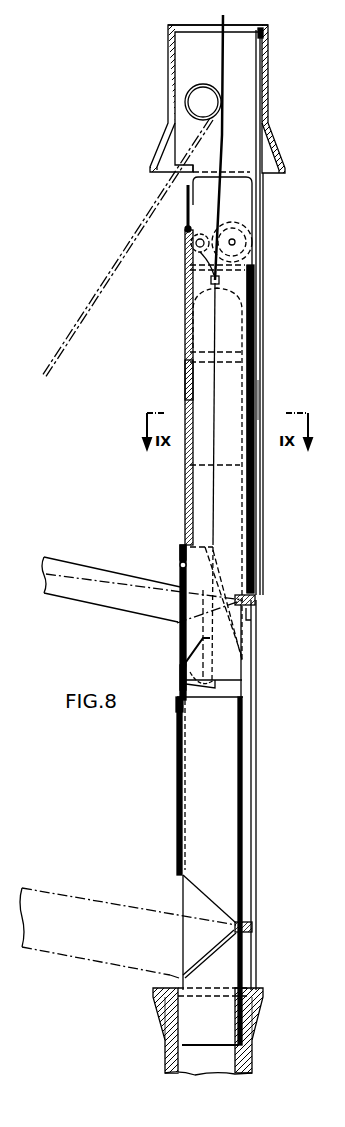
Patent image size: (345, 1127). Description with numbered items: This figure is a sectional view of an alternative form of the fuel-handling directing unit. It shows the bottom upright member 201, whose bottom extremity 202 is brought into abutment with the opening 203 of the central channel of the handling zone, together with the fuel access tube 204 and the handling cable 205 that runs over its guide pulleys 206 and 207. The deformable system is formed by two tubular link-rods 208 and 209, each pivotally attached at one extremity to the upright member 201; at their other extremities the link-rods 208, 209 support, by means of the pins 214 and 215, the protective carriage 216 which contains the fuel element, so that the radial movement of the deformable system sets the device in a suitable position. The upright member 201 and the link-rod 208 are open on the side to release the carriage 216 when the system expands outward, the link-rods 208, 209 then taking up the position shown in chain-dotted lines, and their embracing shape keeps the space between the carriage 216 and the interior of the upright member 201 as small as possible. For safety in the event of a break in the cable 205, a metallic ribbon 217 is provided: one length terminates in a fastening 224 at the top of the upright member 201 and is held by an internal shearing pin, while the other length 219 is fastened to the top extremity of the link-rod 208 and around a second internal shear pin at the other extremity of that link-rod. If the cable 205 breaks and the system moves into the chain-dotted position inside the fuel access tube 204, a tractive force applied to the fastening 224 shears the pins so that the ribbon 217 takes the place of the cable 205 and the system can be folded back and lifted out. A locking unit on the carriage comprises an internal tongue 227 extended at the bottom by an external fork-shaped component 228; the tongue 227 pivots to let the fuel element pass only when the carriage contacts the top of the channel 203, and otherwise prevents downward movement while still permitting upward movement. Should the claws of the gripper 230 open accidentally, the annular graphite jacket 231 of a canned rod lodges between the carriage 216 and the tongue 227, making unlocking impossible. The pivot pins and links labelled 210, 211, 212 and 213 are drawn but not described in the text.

The bottom upright member 201 is at (263, 205).
The bottom extremity 202 is at (263, 997).
The opening of the central channel 203 is at (252, 1025).
The fuel access tube 204 is at (268, 56).
The handling cable 205 is at (224, 75).
The guide pulley 206 is at (203, 97).
The guide pulley 207 is at (235, 245).
The tubular link-rod 208 is at (230, 483).
The tubular link-rod 209 is at (225, 747).
The push rod 210 is at (257, 625).
The link 211 is at (240, 922).
The upper pivot 212 is at (255, 600).
The lower pivot 213 is at (252, 930).
The pin 214 is at (192, 238).
The pin 215 is at (180, 565).
The protective carriage 216 is at (187, 372).
The metallic ribbon 217 is at (258, 97).
The other length of the ribbon 219 is at (259, 333).
The fastening 224 is at (262, 30).
The internal tongue 227 is at (188, 656).
The external fork-shaped component 228 is at (181, 688).
The gripper 230 is at (257, 343).
The annular jacket 231 is at (262, 398).